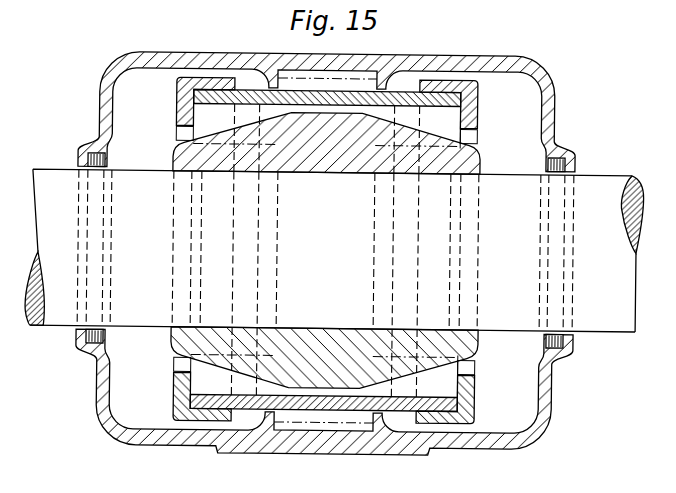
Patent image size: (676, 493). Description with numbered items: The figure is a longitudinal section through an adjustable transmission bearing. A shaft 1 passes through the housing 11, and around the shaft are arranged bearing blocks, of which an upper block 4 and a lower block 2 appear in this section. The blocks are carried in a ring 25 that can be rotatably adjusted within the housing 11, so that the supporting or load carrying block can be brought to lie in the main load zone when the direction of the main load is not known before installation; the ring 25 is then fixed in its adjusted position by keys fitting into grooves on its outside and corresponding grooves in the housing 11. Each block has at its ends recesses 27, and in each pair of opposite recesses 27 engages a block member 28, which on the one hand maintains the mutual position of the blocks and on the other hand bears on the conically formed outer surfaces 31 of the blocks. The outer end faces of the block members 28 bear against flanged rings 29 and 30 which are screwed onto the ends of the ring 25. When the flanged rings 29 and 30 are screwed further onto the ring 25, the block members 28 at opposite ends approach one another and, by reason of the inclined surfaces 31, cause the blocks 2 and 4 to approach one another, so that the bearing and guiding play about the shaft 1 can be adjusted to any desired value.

The shaft 1 is at (503, 315).
The bearing block 2 is at (347, 375).
The bearing block 4 is at (357, 150).
The housing 11 is at (103, 395).
The ring 25 is at (192, 138).
The recess 27 is at (435, 148).
The block member 28 is at (433, 122).
The flanged ring 29 is at (186, 100).
The flanged ring 30 is at (467, 122).
The conically formed outer surface 31 is at (397, 148).